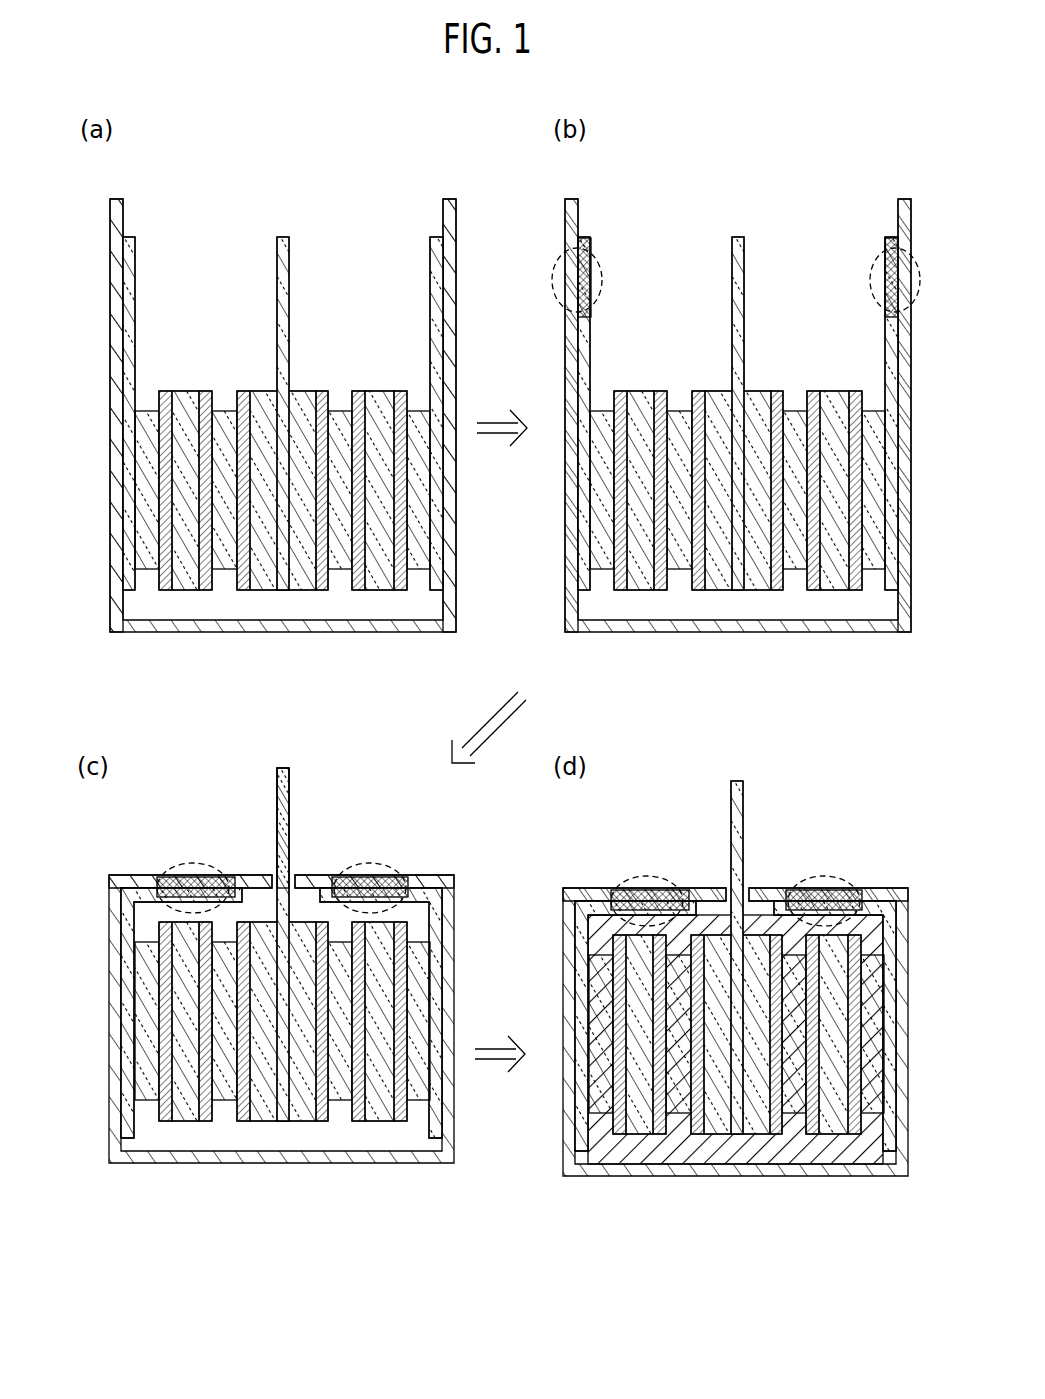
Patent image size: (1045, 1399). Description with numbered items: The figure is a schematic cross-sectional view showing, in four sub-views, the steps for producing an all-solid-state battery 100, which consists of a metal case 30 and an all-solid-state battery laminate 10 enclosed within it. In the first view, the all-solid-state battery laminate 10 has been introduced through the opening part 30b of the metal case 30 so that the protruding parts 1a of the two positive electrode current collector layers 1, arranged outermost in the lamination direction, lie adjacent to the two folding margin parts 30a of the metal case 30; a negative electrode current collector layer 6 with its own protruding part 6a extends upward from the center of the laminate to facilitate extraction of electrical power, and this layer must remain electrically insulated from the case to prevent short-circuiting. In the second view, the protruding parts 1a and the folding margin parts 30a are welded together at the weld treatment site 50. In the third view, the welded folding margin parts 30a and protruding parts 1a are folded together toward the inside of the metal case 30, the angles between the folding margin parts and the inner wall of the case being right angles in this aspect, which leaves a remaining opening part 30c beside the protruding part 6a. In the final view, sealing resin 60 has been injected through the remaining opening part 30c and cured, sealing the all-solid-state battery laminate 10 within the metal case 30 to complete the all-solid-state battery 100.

The positive electrode current collector layer 1 is at (140, 391).
The protruding part 1a is at (138, 238).
The negative electrode current collector layer 6 is at (289, 383).
The protruding part 6a is at (293, 770).
The all-solid-state battery laminate 10 is at (398, 185).
The metal case 30 is at (480, 711).
The folding margin part 30a is at (108, 200).
The opening part 30b is at (302, 232).
The remaining opening part 30c is at (272, 880).
The weld treatment site 50 is at (872, 273).
The sealing resin 60 is at (867, 925).
The all-solid-state battery 100 is at (606, 858).